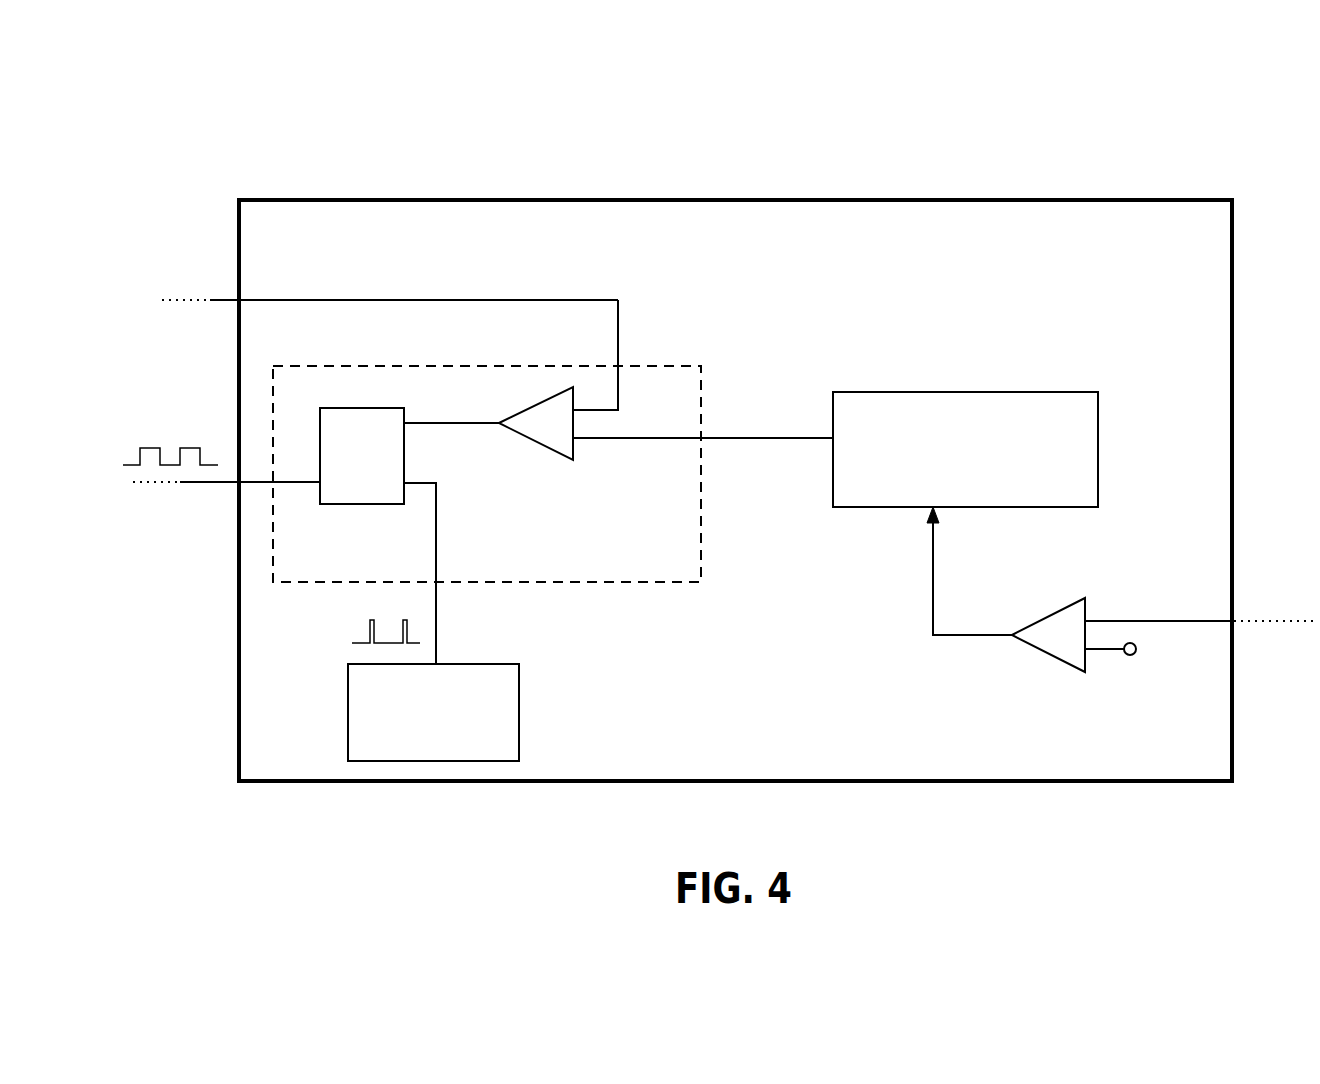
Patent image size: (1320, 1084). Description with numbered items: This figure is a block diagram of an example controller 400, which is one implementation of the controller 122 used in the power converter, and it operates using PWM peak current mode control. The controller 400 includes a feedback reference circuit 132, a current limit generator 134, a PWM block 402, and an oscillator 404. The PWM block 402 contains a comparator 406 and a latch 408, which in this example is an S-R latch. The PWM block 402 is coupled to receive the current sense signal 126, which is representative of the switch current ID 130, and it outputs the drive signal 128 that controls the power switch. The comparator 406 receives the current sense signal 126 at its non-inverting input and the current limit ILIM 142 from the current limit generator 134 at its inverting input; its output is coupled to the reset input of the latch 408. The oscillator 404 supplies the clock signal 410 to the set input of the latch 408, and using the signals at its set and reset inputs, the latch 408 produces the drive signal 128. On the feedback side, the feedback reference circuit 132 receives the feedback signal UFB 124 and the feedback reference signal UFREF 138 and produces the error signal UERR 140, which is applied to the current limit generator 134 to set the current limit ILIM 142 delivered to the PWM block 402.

The controller 122 is at (228, 64).
The controller 400 is at (998, 190).
The current sense signal 126 is at (153, 242).
The switch current ID 130 is at (550, 262).
The drive signal 128 is at (177, 440).
The PWM block 402 is at (440, 358).
The comparator 406 is at (512, 408).
The latch 408 is at (360, 510).
The current limit ILIM 142 is at (763, 392).
The current limit generator 134 is at (870, 515).
The error signal UERR 140 is at (935, 672).
The feedback reference circuit 132 is at (1055, 598).
The feedback signal UFB 124 is at (1155, 588).
The feedback reference signal UFREF 138 is at (1170, 668).
The oscillator 404 is at (535, 713).
The clock signal 410 is at (530, 633).